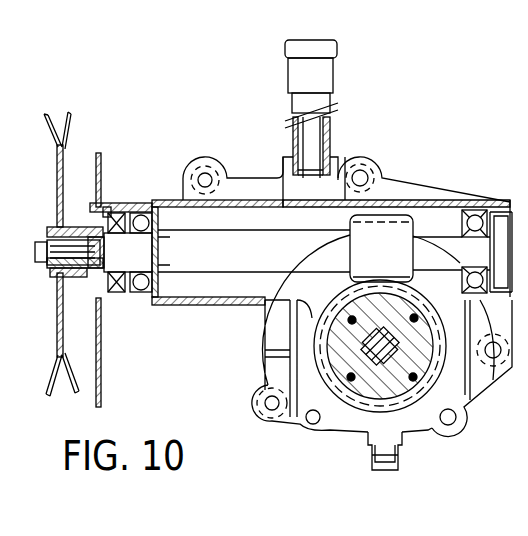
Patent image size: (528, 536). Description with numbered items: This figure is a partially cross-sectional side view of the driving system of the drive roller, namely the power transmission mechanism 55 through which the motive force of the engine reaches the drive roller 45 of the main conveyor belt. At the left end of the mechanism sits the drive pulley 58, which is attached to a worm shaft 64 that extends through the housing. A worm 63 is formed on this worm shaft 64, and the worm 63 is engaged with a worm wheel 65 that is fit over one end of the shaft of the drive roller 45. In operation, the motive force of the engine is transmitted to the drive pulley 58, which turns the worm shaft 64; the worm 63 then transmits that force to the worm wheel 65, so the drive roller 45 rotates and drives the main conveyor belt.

The drive pulley 58 is at (68, 141).
The power transmission mechanism 55 is at (152, 183).
The worm shaft 64 is at (205, 262).
The worm 63 is at (402, 230).
The worm wheel 65 is at (327, 342).
The drive roller 45 is at (375, 363).